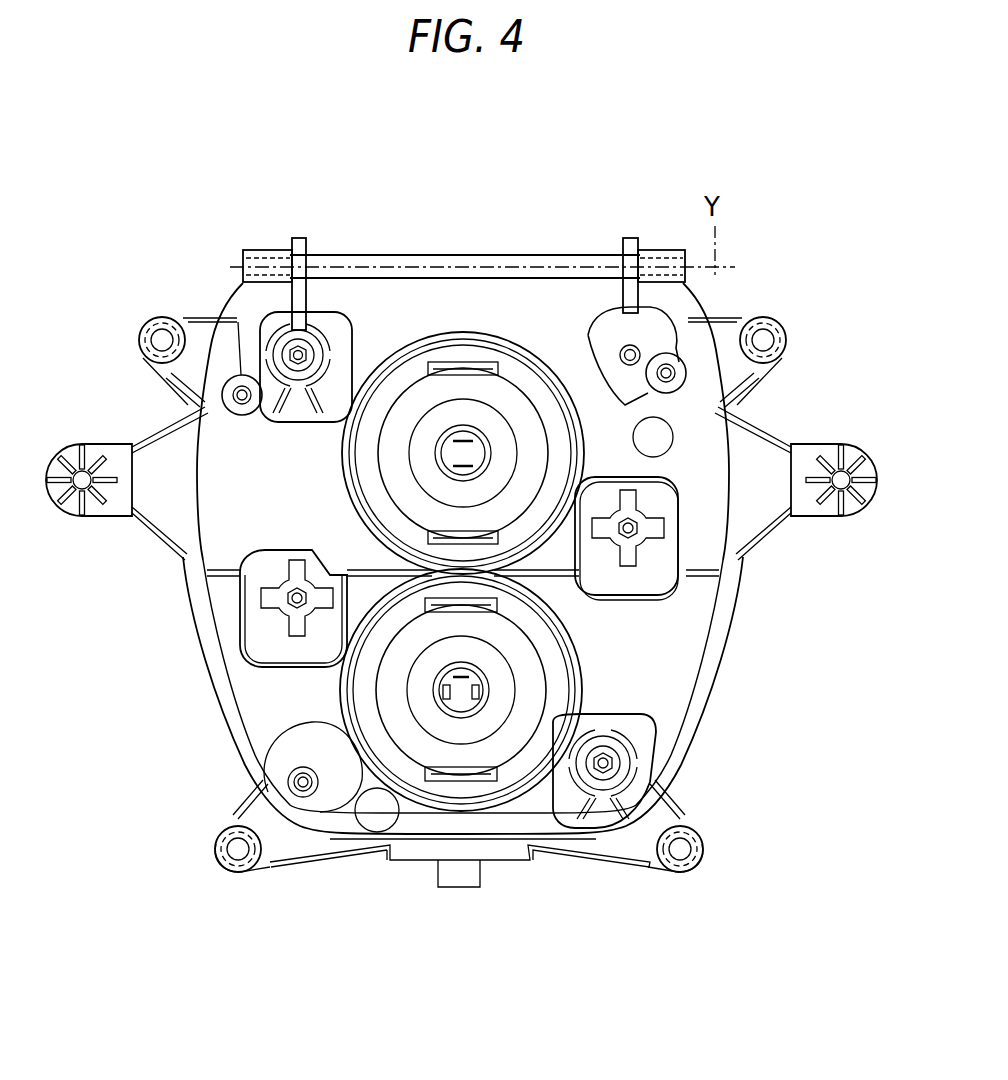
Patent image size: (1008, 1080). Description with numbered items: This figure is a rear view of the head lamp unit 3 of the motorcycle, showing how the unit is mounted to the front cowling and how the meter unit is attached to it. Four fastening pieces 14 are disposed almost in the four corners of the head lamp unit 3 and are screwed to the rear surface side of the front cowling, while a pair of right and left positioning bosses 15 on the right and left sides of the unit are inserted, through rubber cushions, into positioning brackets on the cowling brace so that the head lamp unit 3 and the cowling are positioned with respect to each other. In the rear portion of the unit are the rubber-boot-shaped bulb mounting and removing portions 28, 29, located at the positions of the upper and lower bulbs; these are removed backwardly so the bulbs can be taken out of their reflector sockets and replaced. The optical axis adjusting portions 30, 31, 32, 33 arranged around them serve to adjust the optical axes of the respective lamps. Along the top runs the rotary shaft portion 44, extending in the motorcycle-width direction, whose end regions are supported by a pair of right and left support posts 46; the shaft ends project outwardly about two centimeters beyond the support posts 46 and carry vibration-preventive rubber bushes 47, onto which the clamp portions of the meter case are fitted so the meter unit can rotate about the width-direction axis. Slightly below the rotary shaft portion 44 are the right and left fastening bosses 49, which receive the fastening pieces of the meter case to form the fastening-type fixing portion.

The head lamp unit 3 is at (463, 218).
The fastening pieces 14 is at (148, 327).
The positioning bosses 15 is at (58, 456).
The bulb mounting and removing portion 28 is at (437, 345).
The bulb mounting and removing portion 29 is at (430, 800).
The optical axis adjusting portion 30 is at (283, 350).
The optical axis adjusting portion 31 is at (655, 545).
The optical axis adjusting portion 32 is at (275, 605).
The optical axis adjusting portion 33 is at (627, 753).
The rotary shaft portion 44 is at (530, 255).
The support posts 46 is at (307, 296).
The rubber bushes 47 is at (266, 250).
The fastening bosses 49 is at (222, 400).